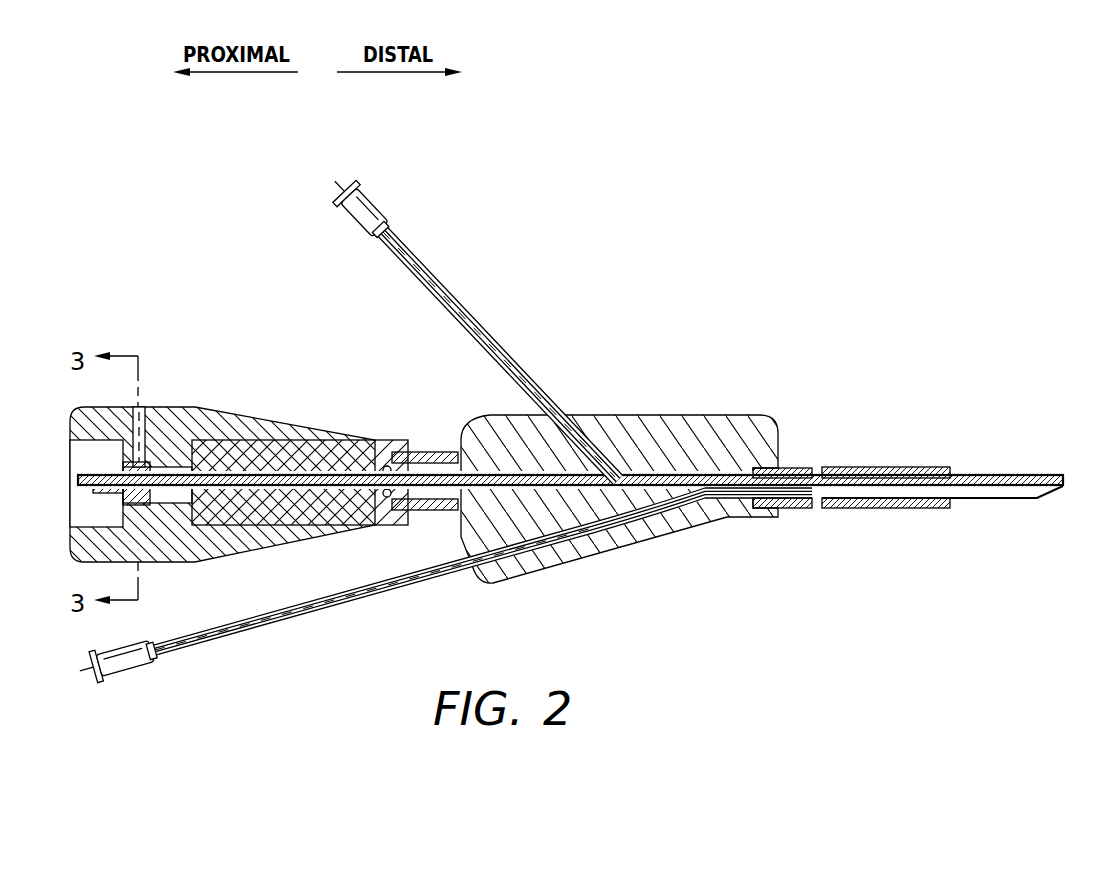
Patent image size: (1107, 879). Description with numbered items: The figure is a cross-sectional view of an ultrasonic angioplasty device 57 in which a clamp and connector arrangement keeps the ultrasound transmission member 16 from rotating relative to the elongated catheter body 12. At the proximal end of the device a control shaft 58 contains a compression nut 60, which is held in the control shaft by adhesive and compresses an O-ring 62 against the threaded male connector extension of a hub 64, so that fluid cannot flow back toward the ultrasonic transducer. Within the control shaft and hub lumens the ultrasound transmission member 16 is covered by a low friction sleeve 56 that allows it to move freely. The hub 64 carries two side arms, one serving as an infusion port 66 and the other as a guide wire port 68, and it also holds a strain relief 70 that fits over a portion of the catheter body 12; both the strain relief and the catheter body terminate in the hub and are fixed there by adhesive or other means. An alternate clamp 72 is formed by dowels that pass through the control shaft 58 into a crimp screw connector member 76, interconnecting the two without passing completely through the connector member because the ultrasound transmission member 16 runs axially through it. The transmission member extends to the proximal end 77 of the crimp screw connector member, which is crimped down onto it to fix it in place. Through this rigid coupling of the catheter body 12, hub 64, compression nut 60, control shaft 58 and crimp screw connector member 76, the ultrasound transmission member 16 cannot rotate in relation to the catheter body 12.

The catheter body 12 is at (1037, 512).
The ultrasound transmission member 16 is at (994, 474).
The low friction sleeve 56 is at (478, 470).
The ultrasonic angioplasty device 57 is at (720, 234).
The control shaft 58 is at (198, 404).
The compression nut 60 is at (403, 527).
The O-ring 62 is at (390, 467).
The hub 64 is at (662, 413).
The infusion port 66 is at (380, 193).
The guide wire port 68 is at (130, 682).
The strain relief 70 is at (883, 467).
The clamp 72 is at (152, 430).
The crimp screw connector member 76 is at (110, 494).
The proximal end 77 is at (87, 477).